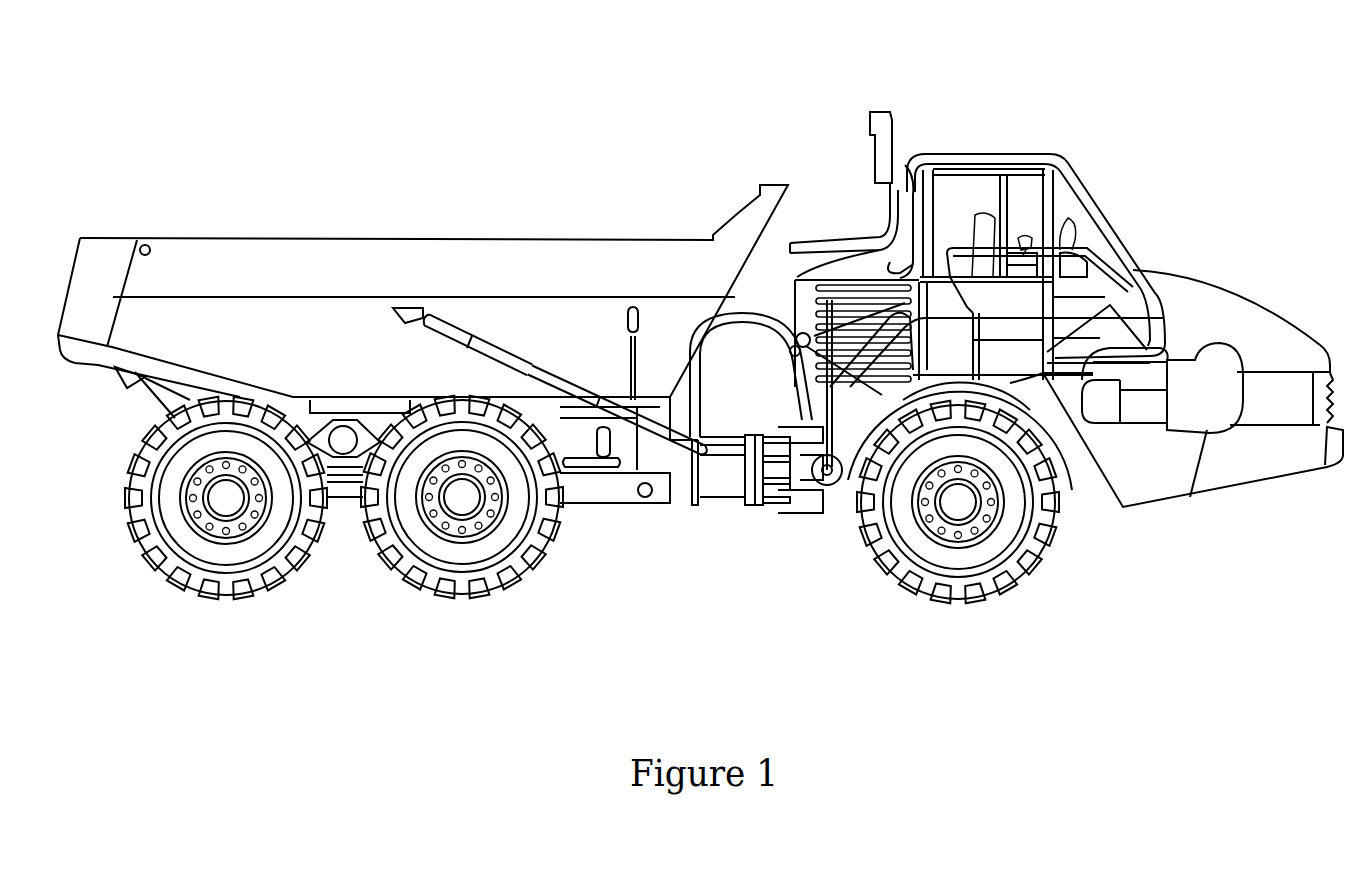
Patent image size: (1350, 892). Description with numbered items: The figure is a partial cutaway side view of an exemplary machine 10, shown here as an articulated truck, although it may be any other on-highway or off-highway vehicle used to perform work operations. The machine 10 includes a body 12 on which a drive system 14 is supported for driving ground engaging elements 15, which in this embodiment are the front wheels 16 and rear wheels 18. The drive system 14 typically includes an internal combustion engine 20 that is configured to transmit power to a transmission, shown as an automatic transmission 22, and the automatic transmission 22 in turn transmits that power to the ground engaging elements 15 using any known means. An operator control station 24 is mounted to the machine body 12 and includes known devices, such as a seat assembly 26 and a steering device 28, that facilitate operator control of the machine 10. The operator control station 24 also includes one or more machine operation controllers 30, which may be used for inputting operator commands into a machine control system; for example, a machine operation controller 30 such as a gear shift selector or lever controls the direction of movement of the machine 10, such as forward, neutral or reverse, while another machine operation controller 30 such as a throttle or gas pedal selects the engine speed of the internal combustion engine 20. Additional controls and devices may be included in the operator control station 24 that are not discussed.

The machine 10 is at (1118, 48).
The body 12 is at (617, 498).
The drive system 14 is at (1162, 443).
The ground engaging elements 15 is at (325, 643).
The front wheels 16 is at (922, 595).
The rear wheels 18 is at (196, 597).
The internal combustion engine 20 is at (1215, 347).
The automatic transmission 22 is at (1105, 415).
The operator control station 24 is at (945, 150).
The seat assembly 26 is at (992, 238).
The steering device 28 is at (1067, 212).
The machine operation controller 30 is at (1025, 235).